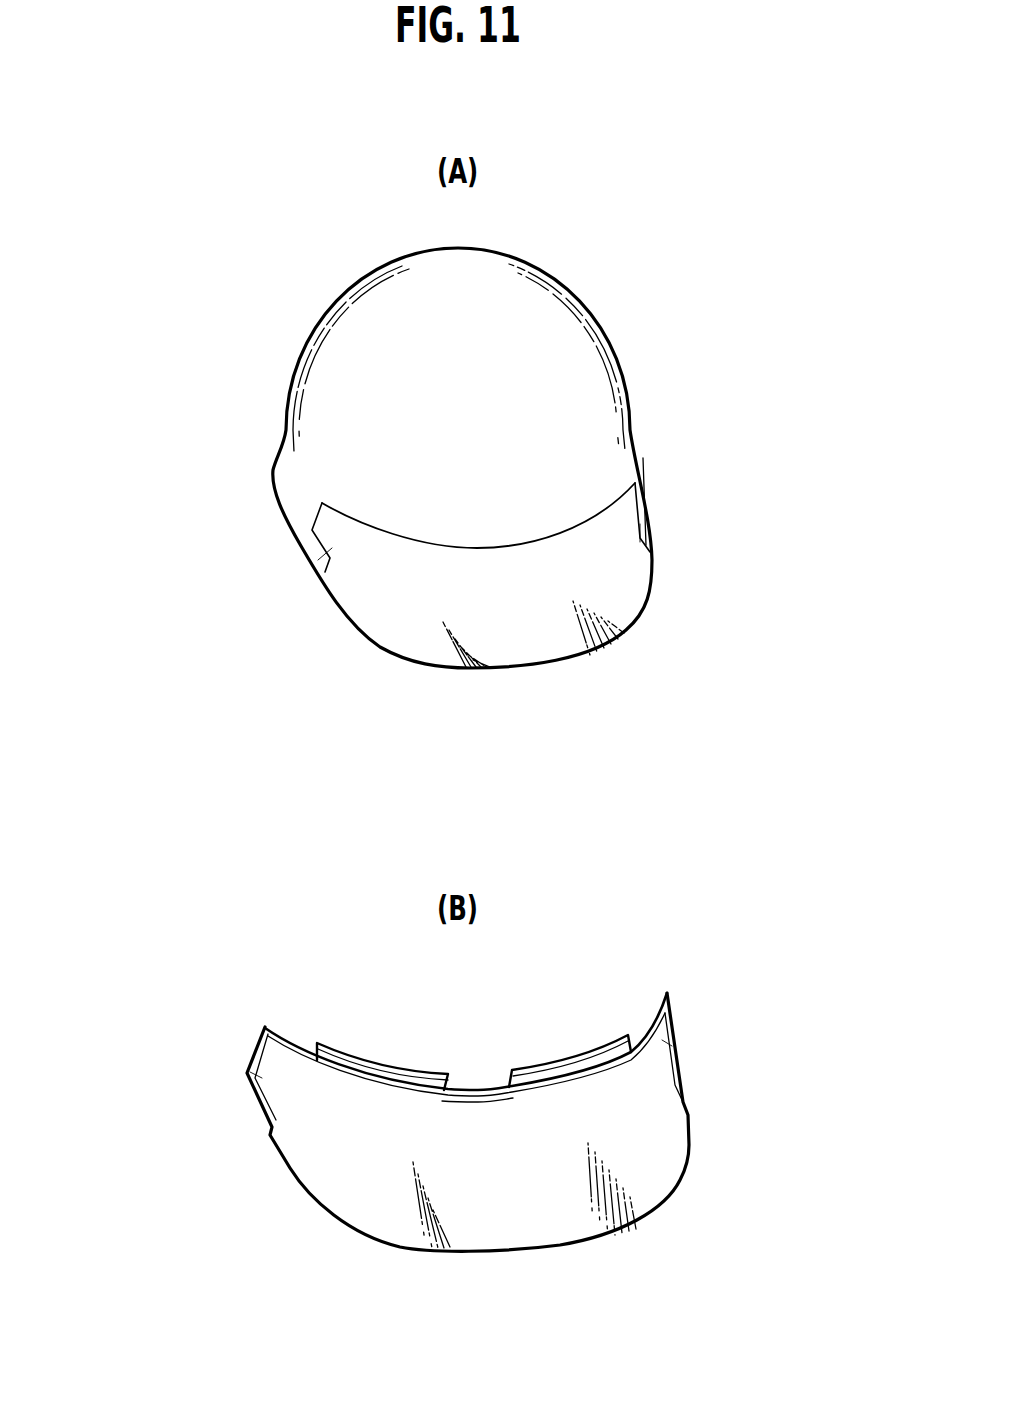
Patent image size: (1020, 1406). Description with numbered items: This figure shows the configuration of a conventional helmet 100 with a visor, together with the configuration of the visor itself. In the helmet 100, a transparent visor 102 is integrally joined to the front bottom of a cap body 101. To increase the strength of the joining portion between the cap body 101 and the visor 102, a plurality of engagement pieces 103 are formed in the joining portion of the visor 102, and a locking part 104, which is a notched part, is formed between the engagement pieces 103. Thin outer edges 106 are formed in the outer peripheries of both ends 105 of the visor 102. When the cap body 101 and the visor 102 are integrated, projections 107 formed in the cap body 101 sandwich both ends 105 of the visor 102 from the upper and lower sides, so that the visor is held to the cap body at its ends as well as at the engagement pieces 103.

The helmet 100 is at (612, 300).
The cap body 101 is at (314, 381).
The visor 102 is at (513, 648).
The engagement pieces 103 is at (385, 1077).
The locking part 104 is at (478, 1079).
The ends of the visor 105 is at (328, 523).
The thin outer edges 106 is at (258, 1053).
The projections 107 is at (320, 558).